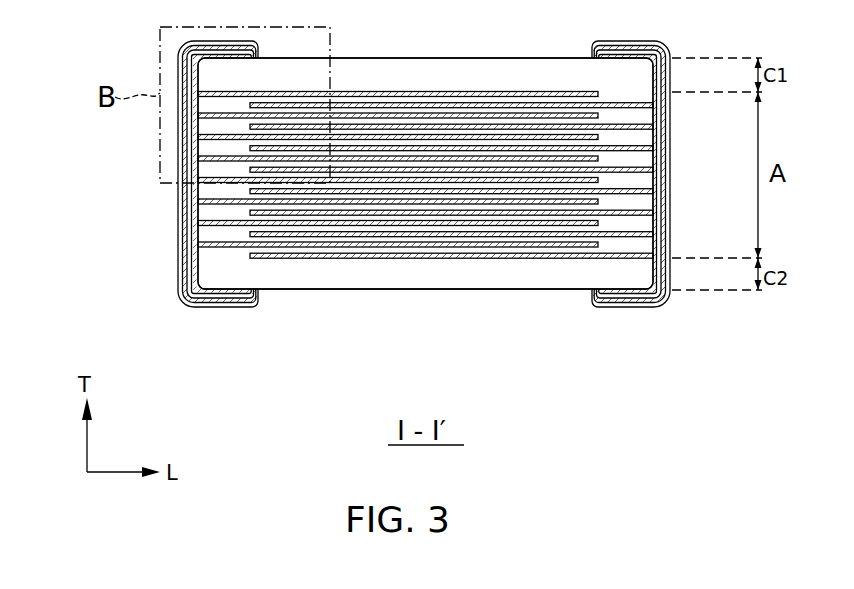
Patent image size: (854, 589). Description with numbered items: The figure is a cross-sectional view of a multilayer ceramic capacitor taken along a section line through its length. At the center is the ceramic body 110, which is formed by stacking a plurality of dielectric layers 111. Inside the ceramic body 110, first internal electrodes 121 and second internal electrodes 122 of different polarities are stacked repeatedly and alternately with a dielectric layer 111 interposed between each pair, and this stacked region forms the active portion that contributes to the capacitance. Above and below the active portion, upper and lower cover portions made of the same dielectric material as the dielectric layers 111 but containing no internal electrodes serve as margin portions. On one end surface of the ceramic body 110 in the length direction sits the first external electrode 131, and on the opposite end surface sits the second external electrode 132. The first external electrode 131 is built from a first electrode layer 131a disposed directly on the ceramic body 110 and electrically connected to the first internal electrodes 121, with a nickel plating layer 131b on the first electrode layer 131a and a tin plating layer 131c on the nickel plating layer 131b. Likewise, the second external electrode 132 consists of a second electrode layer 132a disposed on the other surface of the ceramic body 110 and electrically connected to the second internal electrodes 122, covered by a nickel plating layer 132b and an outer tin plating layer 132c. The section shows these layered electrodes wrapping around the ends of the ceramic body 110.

The ceramic body 110 is at (422, 58).
The dielectric layer 111 is at (640, 138).
The first internal electrode 121 is at (643, 107).
The second internal electrode 122 is at (630, 172).
The first external electrode 131 is at (261, 232).
The first electrode layer 131a is at (182, 299).
The nickel plating layer 131b is at (222, 308).
The tin plating layer 131c is at (274, 217).
The second external electrode 132 is at (588, 232).
The second electrode layer 132a is at (660, 301).
The nickel plating layer 132b is at (625, 308).
The tin plating layer 132c is at (573, 217).